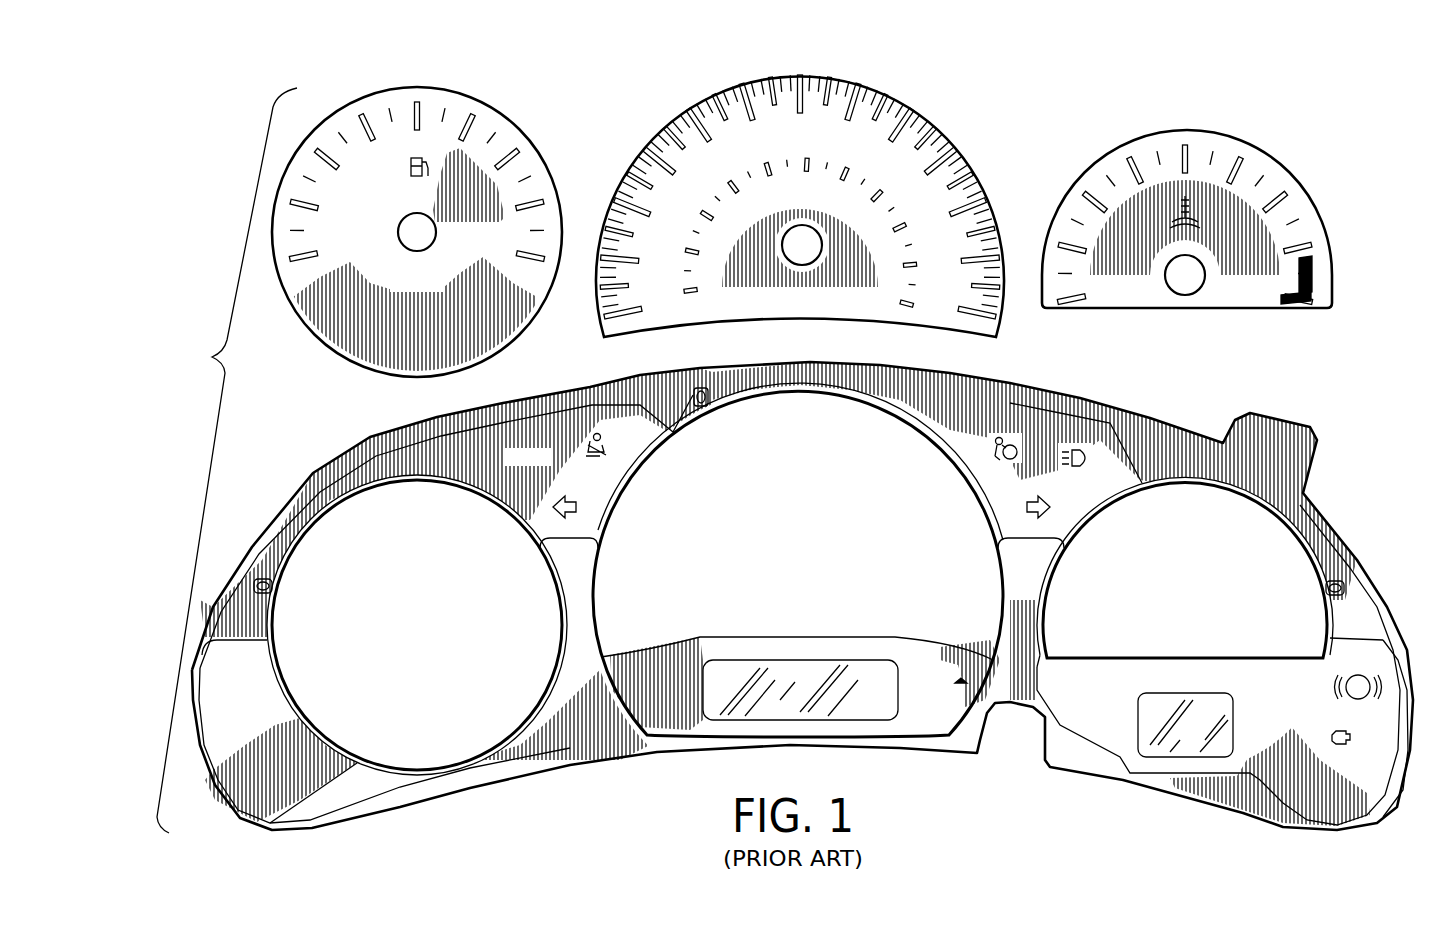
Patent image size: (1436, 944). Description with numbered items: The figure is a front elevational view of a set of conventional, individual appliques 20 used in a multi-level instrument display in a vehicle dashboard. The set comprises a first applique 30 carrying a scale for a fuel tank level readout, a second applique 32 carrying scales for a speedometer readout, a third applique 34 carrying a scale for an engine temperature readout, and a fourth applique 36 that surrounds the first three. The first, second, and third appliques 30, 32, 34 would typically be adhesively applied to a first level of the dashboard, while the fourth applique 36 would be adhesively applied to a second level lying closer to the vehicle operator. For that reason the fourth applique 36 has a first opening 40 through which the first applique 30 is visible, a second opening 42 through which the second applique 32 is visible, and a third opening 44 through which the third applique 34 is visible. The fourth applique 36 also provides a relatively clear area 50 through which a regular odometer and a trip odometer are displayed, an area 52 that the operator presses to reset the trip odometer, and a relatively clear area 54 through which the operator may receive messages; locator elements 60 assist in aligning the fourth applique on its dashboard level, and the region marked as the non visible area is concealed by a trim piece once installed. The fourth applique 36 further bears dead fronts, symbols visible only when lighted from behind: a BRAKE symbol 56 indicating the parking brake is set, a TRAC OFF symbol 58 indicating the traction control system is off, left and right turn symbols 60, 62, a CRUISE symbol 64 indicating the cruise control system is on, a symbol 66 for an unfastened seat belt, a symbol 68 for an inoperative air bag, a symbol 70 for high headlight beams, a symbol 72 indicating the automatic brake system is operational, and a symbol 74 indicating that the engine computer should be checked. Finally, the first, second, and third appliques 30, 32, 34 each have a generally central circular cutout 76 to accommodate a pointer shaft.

The set of appliques 20 is at (172, 367).
The first applique 30 is at (485, 125).
The second applique 32 is at (903, 135).
The third applique 34 is at (1173, 146).
The fourth applique 36 is at (592, 727).
The first opening 40 is at (393, 735).
The second opening 42 is at (702, 597).
The third opening 44 is at (1177, 520).
The relatively clear area 50 is at (875, 710).
The trip odometer reset area 52 is at (950, 707).
The relatively clear message area 54 is at (708, 392).
The BRAKE symbol 56 is at (250, 748).
The TRAC OFF symbol 58 is at (258, 678).
The left turn symbol 60 is at (576, 507).
The right turn symbol 62 is at (1027, 507).
The CRUISE symbol 64 is at (528, 443).
The seat belt symbol 66 is at (604, 447).
The air bag symbol 68 is at (990, 448).
The high beam symbol 70 is at (1087, 455).
The automatic brake system symbol 72 is at (1358, 675).
The check engine symbol 74 is at (1352, 738).
The circular cutout 76 is at (395, 240).